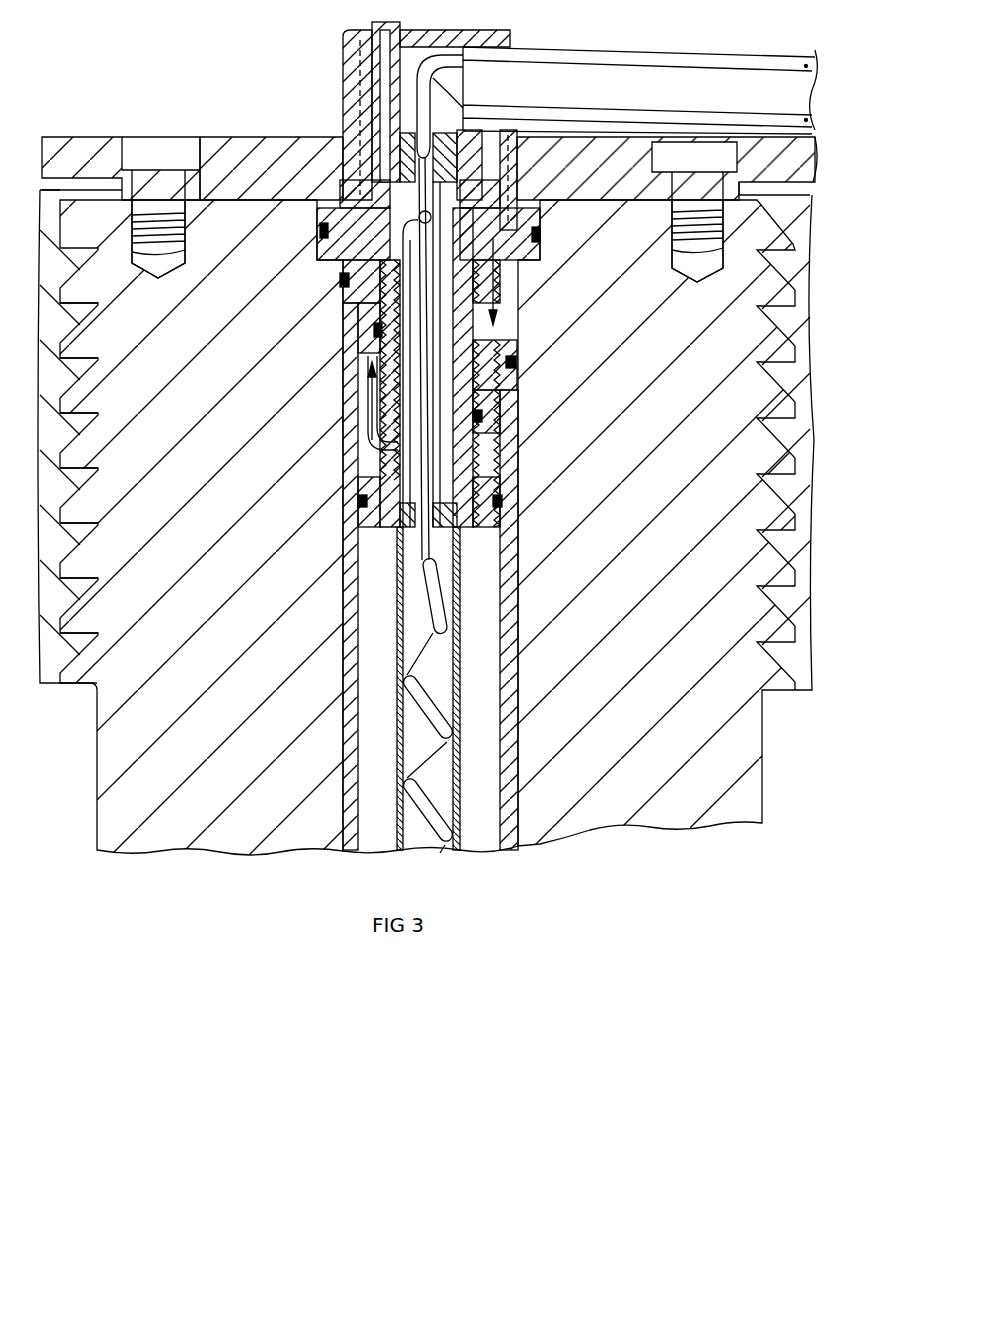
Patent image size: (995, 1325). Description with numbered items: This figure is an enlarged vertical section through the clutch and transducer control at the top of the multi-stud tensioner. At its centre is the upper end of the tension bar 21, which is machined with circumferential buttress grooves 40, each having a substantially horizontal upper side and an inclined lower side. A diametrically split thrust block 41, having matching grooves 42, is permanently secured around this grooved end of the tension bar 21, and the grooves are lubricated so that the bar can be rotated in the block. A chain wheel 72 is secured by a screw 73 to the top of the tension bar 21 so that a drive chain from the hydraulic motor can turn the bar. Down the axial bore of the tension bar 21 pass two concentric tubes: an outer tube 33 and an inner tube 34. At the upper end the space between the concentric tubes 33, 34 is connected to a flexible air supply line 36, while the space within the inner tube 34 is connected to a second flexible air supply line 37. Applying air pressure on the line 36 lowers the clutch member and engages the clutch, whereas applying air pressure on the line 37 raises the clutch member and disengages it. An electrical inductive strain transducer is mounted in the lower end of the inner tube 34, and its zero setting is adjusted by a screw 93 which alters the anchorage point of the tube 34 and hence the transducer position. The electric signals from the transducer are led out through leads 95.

The tension bar 21 is at (180, 830).
The outer tube 33 is at (512, 740).
The inner tube 34 is at (457, 668).
The flexible air supply line 36 is at (683, 50).
The flexible air supply line 37 is at (597, 62).
The circumferential buttress grooves 40 is at (85, 650).
The thrust block 41 is at (58, 648).
The matching grooves 42 is at (90, 598).
The chain wheel 72 is at (99, 150).
The screw 73 is at (173, 152).
The screw 93 is at (383, 72).
The leads 95 is at (438, 607).